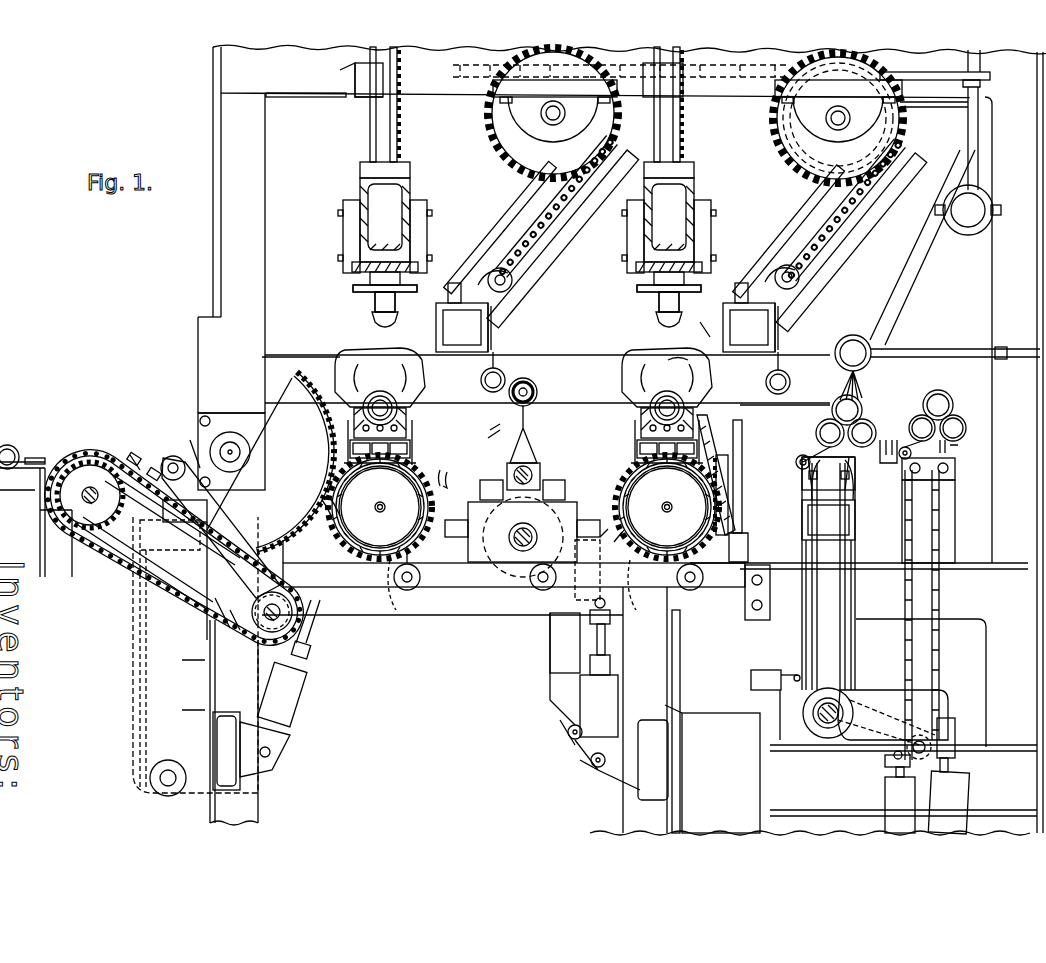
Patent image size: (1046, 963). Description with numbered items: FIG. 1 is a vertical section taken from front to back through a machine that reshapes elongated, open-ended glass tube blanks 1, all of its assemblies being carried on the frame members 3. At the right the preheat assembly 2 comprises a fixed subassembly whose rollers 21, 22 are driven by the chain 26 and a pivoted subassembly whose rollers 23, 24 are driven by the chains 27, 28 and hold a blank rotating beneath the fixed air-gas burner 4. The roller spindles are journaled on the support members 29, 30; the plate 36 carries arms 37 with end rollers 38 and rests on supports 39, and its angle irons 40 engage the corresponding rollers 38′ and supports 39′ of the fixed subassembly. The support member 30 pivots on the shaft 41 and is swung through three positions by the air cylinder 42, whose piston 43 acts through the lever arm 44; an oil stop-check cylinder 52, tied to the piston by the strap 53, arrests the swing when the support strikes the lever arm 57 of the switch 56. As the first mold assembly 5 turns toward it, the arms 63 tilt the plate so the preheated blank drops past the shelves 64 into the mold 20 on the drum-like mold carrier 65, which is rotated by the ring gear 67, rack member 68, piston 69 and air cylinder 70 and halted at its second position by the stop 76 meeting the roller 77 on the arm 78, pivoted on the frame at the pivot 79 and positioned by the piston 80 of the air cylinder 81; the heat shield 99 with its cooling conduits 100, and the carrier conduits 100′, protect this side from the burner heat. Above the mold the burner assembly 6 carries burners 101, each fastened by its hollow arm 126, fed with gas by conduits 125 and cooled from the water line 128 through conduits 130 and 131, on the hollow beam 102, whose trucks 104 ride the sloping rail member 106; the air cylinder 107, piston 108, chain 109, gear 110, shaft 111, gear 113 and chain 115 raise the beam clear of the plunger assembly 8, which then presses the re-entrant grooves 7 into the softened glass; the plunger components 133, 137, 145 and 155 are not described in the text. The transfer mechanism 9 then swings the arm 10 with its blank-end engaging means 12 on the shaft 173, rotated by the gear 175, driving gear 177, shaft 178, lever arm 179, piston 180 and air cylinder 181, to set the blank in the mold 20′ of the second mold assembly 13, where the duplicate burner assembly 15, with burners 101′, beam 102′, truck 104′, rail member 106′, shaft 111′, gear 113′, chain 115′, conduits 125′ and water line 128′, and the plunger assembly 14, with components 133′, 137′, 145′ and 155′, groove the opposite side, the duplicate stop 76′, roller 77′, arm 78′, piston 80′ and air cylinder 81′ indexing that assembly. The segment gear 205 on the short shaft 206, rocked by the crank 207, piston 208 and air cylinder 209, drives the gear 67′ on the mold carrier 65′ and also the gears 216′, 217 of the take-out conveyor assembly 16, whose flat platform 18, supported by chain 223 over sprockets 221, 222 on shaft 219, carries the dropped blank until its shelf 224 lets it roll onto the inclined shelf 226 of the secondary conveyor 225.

The glass tube blanks 1 is at (413, 408).
The preheat assembly 2 is at (915, 405).
The machine frame 3 is at (292, 90).
The fixed air-gas burner 4 is at (850, 336).
The first press bed or mold assembly 5 is at (632, 397).
The multiple air-gas burner assembly 6 is at (628, 381).
The re-entrant groove portions 7 is at (14, 462).
The press bar or die plunger assembly 8 is at (636, 297).
The transfer mechanism 9 is at (548, 470).
The swingable arm 10 is at (536, 405).
The blank end engaging means 12 is at (510, 412).
The second press bed or mold assembly 13 is at (428, 470).
The plunger assembly 14 is at (364, 303).
The multiple air-gas burner assembly 15 is at (348, 364).
The take-out conveyor assembly 16 is at (153, 455).
The flat platform 18 is at (118, 450).
The press bed or mold 20 is at (638, 424).
The press bed or mold 20′ is at (414, 422).
The roller 21 is at (922, 410).
The roller 22 is at (967, 421).
The roller 23 is at (834, 400).
The roller 24 is at (872, 424).
The chain 26 is at (939, 676).
The chain 27 is at (934, 725).
The chain 28 is at (817, 432).
The support member 29 is at (955, 490).
The support or frame member 30 is at (856, 538).
The plate 36 is at (870, 465).
The arms 37 is at (804, 445).
The rollers 38 is at (798, 466).
The pivot 38′ is at (950, 466).
The supports 39 is at (858, 458).
The bracket 39′ is at (942, 450).
The angle irons 40 is at (880, 456).
The shaft 41 is at (828, 698).
The air cylinder 42 is at (968, 782).
The piston 43 is at (957, 733).
The lever arm 44 is at (880, 691).
The oil stop-check cylinder 52 is at (884, 795).
The strap 53 is at (887, 763).
The switch 56 is at (758, 670).
The lever arm 57 is at (796, 675).
The arms 63 is at (734, 444).
The shelves 64 is at (674, 372).
The mold carrier 65 is at (656, 520).
The wheel rim 65′ is at (368, 522).
The ring gear 67 is at (606, 514).
The gear 67′ is at (336, 540).
The rack member 68 is at (730, 473).
The piston 69 is at (720, 650).
The air cylinder 70 is at (750, 780).
The stop 76 is at (640, 576).
The bracket 76′ is at (405, 596).
The roller 77 is at (700, 594).
The roller 77′ is at (415, 588).
The arm 78 is at (628, 616).
The pivot 78′ is at (352, 579).
The pivot 79 is at (534, 582).
The piston 80 is at (608, 649).
The piston rod 80′ is at (312, 634).
The air cylinder 81 is at (618, 689).
The cylinder 81′ is at (305, 684).
The heat shielding member 99 is at (742, 496).
The conduits 100 is at (680, 493).
The conduits 100′ is at (393, 493).
The burners 101 is at (663, 347).
The head 101′ is at (368, 347).
The carrier beam 102 is at (781, 318).
The block 102′ is at (504, 314).
The two-wheeled truck 104 is at (798, 287).
The roller 104′ is at (518, 289).
The rail member 106 is at (838, 260).
The rail 106′ is at (546, 275).
The air cylinder 107 is at (310, 97).
The piston 108 is at (473, 77).
The chain 109 is at (739, 75).
The gear 110 is at (790, 130).
The shaft 111 is at (838, 104).
The housing 111′ is at (553, 125).
The gear 113 is at (790, 168).
The gear 113′ is at (504, 172).
The chain 115 is at (851, 218).
The chain 115′ is at (550, 210).
The conduits 125 is at (741, 281).
The post 125′ is at (454, 293).
The hollow arm 126 is at (701, 322).
The water line 128 is at (788, 382).
The roller 128′ is at (501, 353).
The conduits 130 is at (766, 405).
The conduits 131 is at (799, 354).
The nozzle 133 is at (660, 317).
The nozzle 133′ is at (387, 307).
The cylinder 137 is at (694, 178).
The cylinder 137′ is at (360, 182).
The rack 145 is at (677, 104).
The rack 145′ is at (400, 138).
The bracket 155 is at (626, 238).
The bracket 155′ is at (342, 233).
The shaft 173 is at (505, 470).
The gear 175 is at (537, 461).
The driving gear 177 is at (482, 502).
The shaft 178 is at (530, 550).
The lever arm 179 is at (579, 496).
The piston 180 is at (565, 600).
The air cylinder 181 is at (553, 665).
The segment gear 205 is at (288, 374).
The short shaft 206 is at (232, 433).
The crank 207 is at (189, 440).
The piston 208 is at (193, 490).
The air cylinder 209 is at (133, 639).
The belt 216′ is at (190, 614).
The gear 217 is at (230, 640).
The shaft 219 is at (90, 508).
The sprocket 221 is at (120, 550).
The sprocket 222 is at (256, 630).
The chain 223 is at (140, 572).
The shelf 224 is at (138, 460).
The secondary blank receiving conveyor 225 is at (32, 460).
The inclined shelf 226 is at (50, 462).